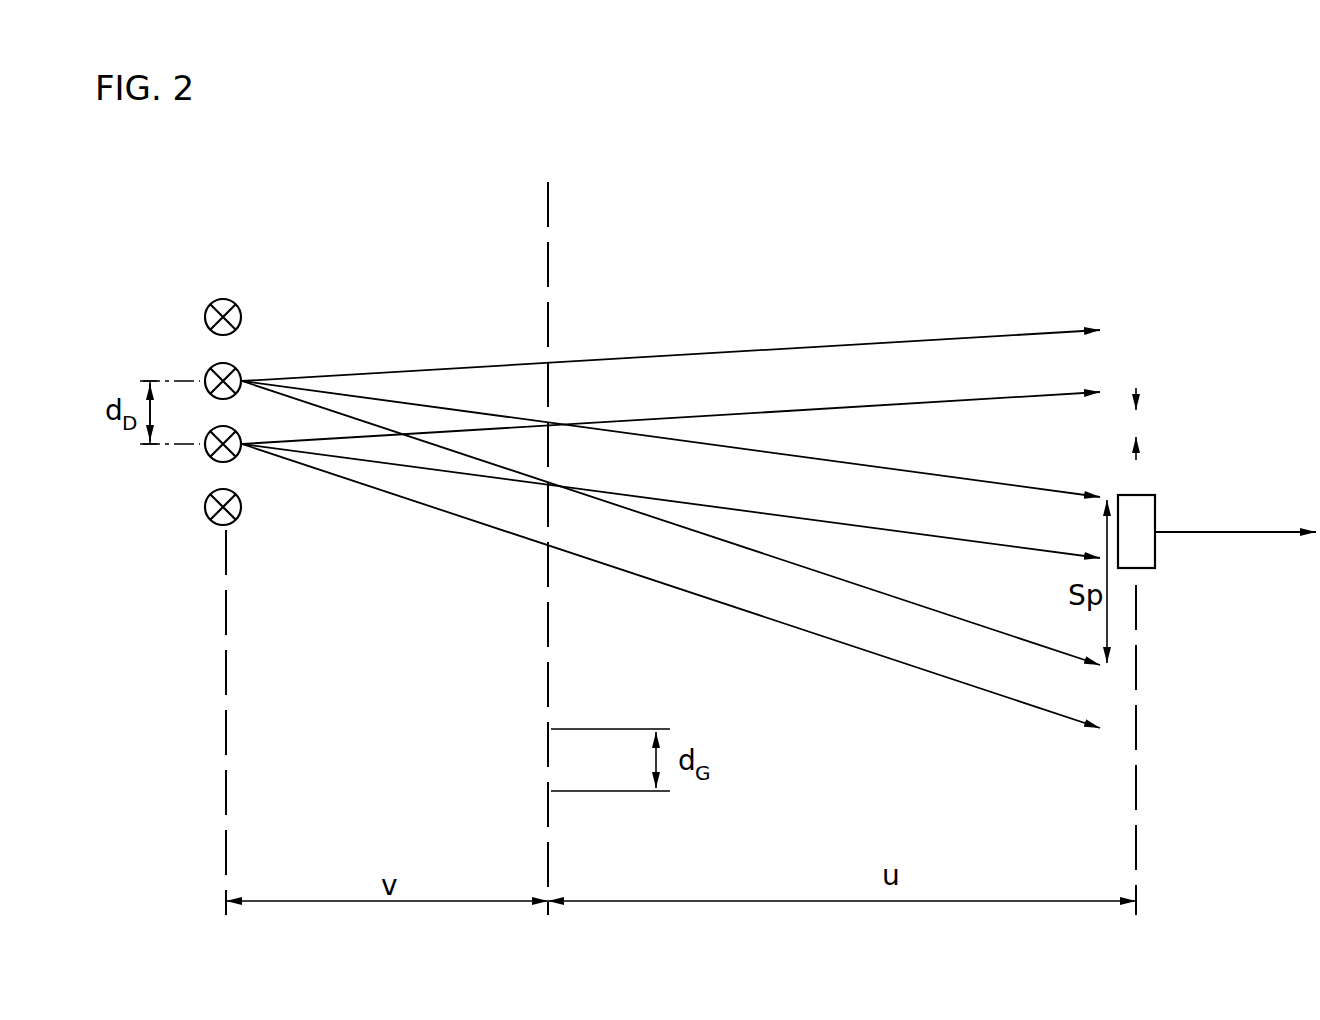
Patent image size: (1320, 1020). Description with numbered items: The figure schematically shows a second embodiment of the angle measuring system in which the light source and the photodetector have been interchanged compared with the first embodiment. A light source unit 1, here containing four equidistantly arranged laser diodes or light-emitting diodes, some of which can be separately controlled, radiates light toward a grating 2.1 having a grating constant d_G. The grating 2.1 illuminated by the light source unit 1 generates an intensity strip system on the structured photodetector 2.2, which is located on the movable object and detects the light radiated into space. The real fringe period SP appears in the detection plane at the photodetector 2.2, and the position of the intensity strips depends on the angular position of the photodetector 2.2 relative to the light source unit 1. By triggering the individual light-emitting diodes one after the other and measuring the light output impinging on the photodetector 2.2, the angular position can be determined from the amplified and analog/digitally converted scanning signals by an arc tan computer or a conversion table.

The light source unit 1 is at (235, 300).
The grating 2.1 is at (548, 212).
The structured photodetector 2.2 is at (1148, 495).